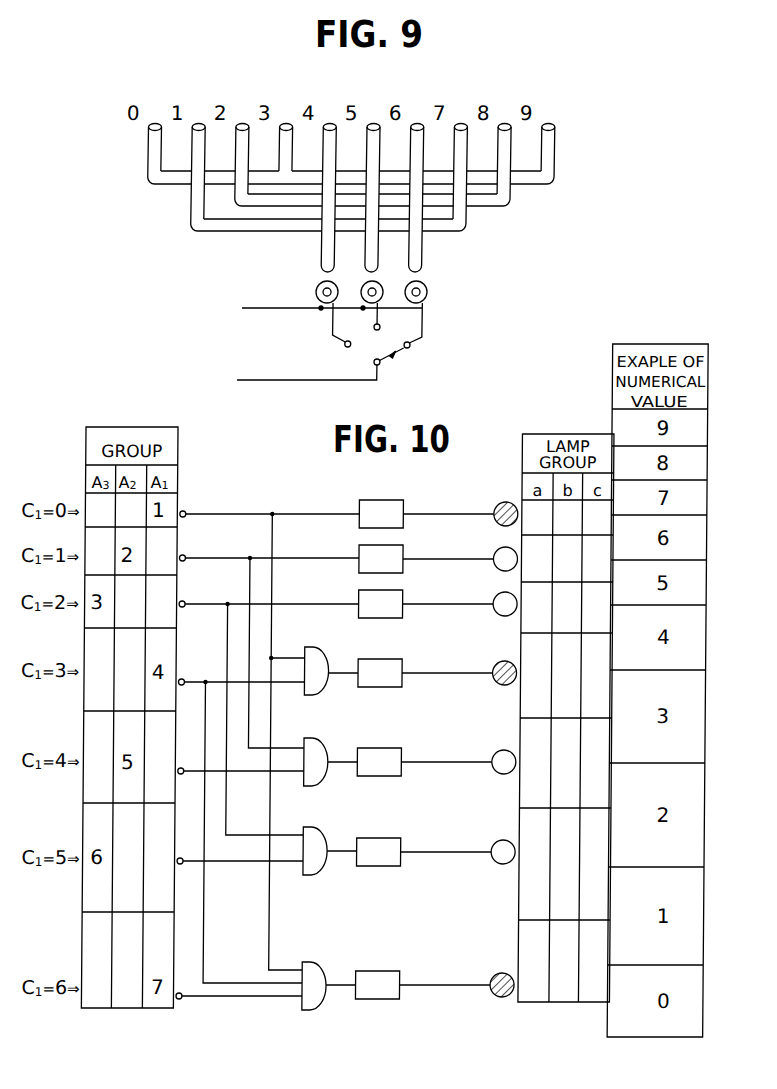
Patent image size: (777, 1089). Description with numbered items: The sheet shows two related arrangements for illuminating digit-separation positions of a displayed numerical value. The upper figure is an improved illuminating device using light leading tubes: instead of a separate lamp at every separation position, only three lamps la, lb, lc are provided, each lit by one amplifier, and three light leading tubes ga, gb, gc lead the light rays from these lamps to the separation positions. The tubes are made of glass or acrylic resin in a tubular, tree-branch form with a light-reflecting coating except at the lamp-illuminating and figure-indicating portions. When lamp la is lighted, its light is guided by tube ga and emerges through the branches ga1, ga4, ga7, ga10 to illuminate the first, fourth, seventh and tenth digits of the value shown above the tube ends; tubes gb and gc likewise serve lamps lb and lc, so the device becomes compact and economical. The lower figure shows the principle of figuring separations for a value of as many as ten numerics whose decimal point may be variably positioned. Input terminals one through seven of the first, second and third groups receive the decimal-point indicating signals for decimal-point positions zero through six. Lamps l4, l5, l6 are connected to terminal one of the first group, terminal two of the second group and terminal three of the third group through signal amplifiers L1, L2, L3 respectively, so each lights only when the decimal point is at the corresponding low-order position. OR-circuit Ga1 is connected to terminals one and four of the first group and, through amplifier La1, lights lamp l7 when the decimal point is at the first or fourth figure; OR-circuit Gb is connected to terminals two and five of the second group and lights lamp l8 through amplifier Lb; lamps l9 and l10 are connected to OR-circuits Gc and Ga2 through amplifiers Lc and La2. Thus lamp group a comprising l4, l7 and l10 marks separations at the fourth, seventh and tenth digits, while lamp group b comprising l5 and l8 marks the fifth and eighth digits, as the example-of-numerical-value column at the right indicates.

In FIG. 9, the branch of light leading tube ga10 is at (155, 123).
In FIG. 9, the branch of light leading tube ga7 is at (286, 123).
In FIG. 9, the branch of light leading tube ga4 is at (417, 123).
In FIG. 9, the branch of light leading tube ga1 is at (549, 123).
In FIG. 9, the light leading tube ga is at (426, 266).
In FIG. 9, the light leading tube gb is at (382, 266).
In FIG. 9, the light leading tube gc is at (338, 266).
In FIG. 9, the lamp la is at (430, 292).
In FIG. 9, the lamp lb is at (370, 302).
In FIG. 9, the lamp lc is at (318, 289).
In FIG. 10, the signal amplifier L1 is at (404, 505).
In FIG. 10, the signal amplifier L2 is at (404, 550).
In FIG. 10, the signal amplifier L3 is at (404, 595).
In FIG. 10, the signal amplifier La1 is at (404, 681).
In FIG. 10, the signal amplifier Lb is at (404, 770).
In FIG. 10, the signal amplifier Lc is at (404, 860).
In FIG. 10, the signal amplifier La2 is at (404, 993).
In FIG. 10, the OR-circuit Ga1 is at (320, 652).
In FIG. 10, the OR-circuit Gb is at (320, 744).
In FIG. 10, the OR-circuit Gc is at (318, 833).
In FIG. 10, the OR-circuit Ga2 is at (318, 966).
In FIG. 10, the lamp l4 is at (537, 517).
In FIG. 10, the lamp l5 is at (567, 558).
In FIG. 10, the lamp l6 is at (596, 607).
In FIG. 10, the lamp l7 is at (536, 675).
In FIG. 10, the lamp l8 is at (565, 763).
In FIG. 10, the lamp l9 is at (595, 864).
In FIG. 10, the lamp l10 is at (534, 961).